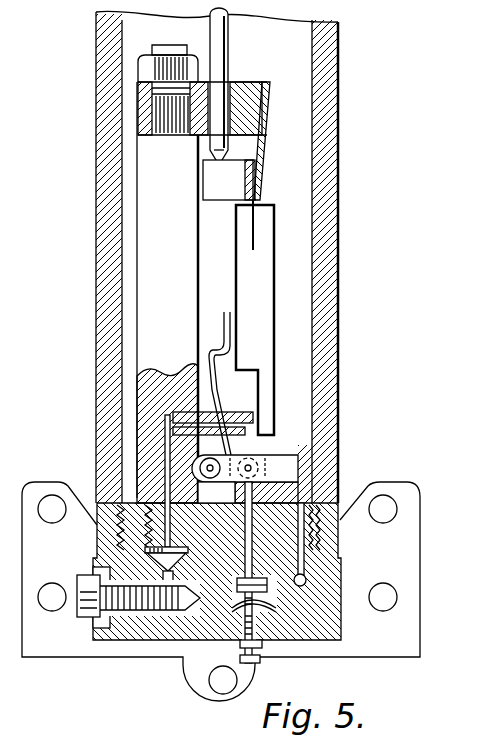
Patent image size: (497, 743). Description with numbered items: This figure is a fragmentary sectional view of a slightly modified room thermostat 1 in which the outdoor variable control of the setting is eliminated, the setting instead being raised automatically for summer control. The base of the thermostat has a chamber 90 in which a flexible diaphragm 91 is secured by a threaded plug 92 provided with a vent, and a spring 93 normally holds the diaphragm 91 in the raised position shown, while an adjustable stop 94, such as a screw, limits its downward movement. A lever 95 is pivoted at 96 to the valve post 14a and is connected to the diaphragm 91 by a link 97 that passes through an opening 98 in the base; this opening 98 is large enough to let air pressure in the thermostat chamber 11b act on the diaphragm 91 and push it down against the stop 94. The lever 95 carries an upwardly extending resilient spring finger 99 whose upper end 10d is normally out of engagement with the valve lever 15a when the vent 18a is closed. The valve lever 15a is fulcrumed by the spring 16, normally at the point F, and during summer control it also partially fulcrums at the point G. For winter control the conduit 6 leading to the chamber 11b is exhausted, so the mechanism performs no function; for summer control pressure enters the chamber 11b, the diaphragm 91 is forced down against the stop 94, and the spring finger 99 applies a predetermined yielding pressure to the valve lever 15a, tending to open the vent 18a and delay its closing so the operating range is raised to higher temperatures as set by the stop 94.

The instrument 1 is at (0, 338).
The valve post 14a is at (157, 295).
The upper end of spring finger 10d is at (219, 373).
The valve lever 15a is at (262, 275).
The thermostat chamber 11b is at (293, 298).
The spring 16 is at (262, 152).
The normal fulcrum point F is at (255, 157).
The partial fulcrum point G is at (258, 200).
The resilient spring finger 99 is at (220, 388).
The vent 18a is at (253, 412).
The lever 95 is at (290, 467).
The pivot 96 is at (211, 478).
The link 97 is at (253, 495).
The opening 98 is at (297, 505).
The conduit 6 is at (307, 580).
The chamber 90 is at (273, 585).
The flexible diaphragm 91 is at (280, 611).
The threaded plug 92 is at (277, 643).
The spring 93 is at (330, 638).
The adjustable stop 94 is at (260, 660).